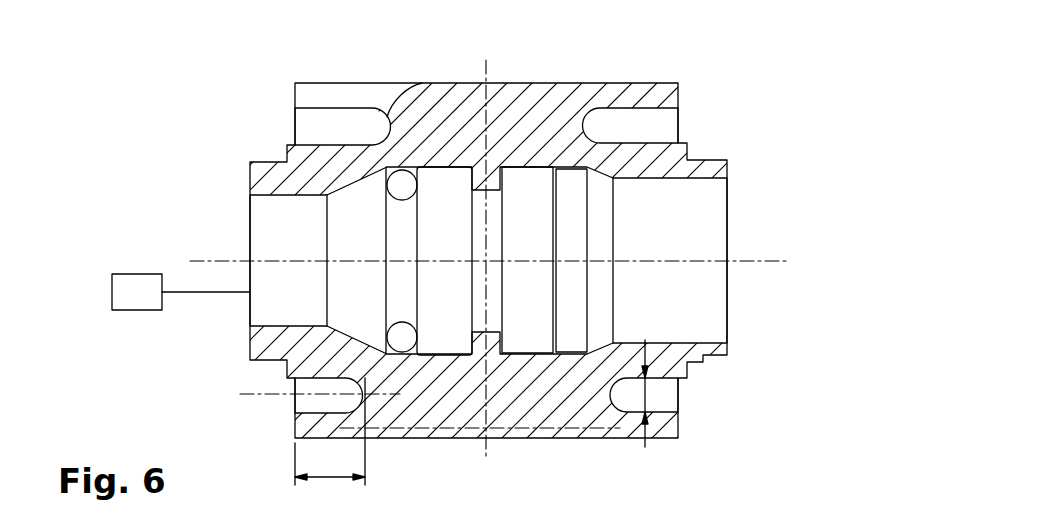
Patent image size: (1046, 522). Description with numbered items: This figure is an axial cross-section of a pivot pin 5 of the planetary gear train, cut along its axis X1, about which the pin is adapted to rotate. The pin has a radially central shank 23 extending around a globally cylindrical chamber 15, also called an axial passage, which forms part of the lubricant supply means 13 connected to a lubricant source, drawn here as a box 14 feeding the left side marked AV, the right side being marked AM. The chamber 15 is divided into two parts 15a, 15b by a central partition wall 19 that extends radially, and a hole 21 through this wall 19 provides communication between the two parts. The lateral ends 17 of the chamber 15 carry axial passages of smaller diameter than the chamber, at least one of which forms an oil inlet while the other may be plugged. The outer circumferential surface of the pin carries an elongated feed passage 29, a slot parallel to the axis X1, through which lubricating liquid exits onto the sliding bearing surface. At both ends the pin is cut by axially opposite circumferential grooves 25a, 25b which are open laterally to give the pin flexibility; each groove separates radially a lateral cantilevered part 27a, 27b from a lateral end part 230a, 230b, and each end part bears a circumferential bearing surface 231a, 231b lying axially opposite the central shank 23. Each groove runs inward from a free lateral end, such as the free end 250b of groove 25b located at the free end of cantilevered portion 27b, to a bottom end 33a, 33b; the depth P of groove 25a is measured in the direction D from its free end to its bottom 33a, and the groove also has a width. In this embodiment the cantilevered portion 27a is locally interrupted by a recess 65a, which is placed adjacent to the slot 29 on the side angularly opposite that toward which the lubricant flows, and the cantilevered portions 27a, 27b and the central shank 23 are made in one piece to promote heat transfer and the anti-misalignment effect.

The pivot pin 5 is at (540, 75).
The lubricant supply means 13 is at (300, 237).
The pump / fluid source 14 is at (142, 297).
The chamber 15 is at (457, 185).
The first part of the chamber 15a is at (442, 337).
The second part of the chamber 15b is at (570, 333).
The ends of the chamber 17 is at (287, 285).
The central partition wall 19 is at (492, 177).
The hole 21 is at (523, 318).
The central shank 23 is at (525, 160).
The circumferential groove 25a is at (320, 125).
The circumferential groove 25b is at (638, 125).
The lateral cantilevered part 27a is at (308, 98).
The lateral cantilevered part 27b is at (678, 426).
The feed passage 29 is at (567, 428).
The bottom end of the groove 33a is at (363, 397).
The bottom end of the groove 33b is at (572, 122).
The recess 65a is at (353, 95).
The lateral end part 230a is at (273, 172).
The lateral end part 230b is at (702, 165).
The circumferential bearing surface 231a is at (272, 158).
The circumferential bearing surface 231b is at (703, 375).
The free lateral end of the groove 250b is at (678, 117).
The axis X1 is at (775, 262).
The direction of groove depth D is at (262, 395).
The depth P is at (330, 431).
The forward direction AV is at (131, 225).
The rearward direction AM is at (795, 234).